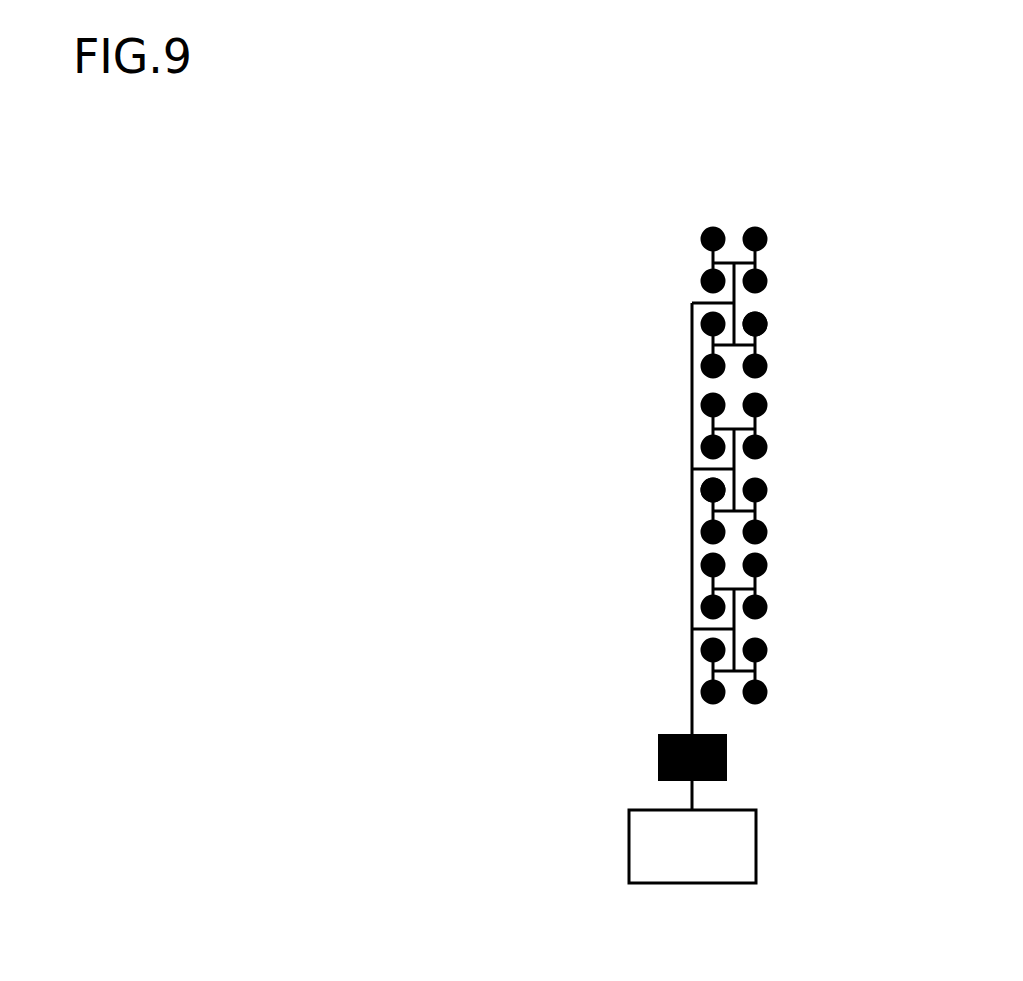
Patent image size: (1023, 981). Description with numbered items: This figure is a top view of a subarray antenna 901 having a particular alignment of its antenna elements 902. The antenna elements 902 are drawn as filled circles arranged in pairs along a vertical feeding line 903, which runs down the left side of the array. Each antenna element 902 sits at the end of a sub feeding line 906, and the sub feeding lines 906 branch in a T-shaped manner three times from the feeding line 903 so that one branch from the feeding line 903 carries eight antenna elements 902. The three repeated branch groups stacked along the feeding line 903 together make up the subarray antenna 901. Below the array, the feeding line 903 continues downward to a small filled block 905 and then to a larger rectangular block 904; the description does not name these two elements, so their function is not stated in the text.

The subarray antenna 901 is at (892, 238).
The antenna element 902 is at (767, 322).
The feeding line 903 is at (691, 388).
The drive circuit 904 is at (757, 857).
The resistor element 905 is at (727, 760).
The sub feeding line 906 is at (703, 470).